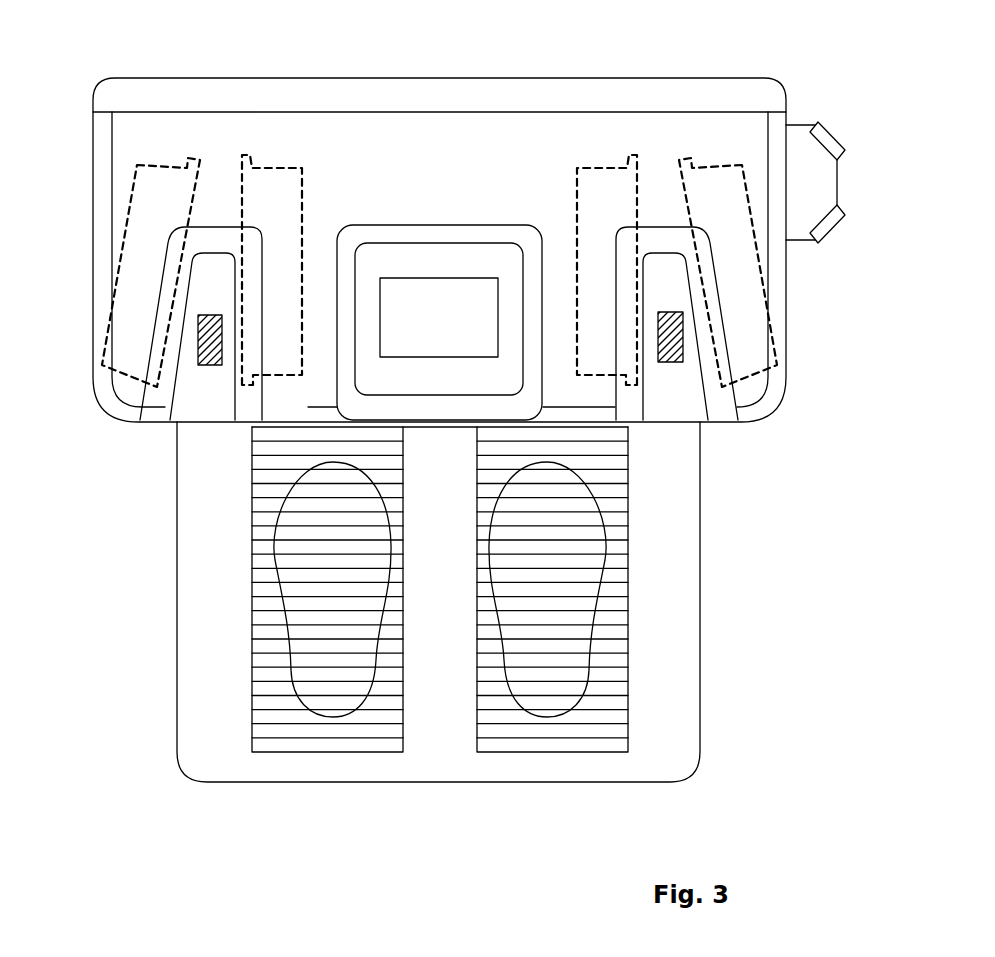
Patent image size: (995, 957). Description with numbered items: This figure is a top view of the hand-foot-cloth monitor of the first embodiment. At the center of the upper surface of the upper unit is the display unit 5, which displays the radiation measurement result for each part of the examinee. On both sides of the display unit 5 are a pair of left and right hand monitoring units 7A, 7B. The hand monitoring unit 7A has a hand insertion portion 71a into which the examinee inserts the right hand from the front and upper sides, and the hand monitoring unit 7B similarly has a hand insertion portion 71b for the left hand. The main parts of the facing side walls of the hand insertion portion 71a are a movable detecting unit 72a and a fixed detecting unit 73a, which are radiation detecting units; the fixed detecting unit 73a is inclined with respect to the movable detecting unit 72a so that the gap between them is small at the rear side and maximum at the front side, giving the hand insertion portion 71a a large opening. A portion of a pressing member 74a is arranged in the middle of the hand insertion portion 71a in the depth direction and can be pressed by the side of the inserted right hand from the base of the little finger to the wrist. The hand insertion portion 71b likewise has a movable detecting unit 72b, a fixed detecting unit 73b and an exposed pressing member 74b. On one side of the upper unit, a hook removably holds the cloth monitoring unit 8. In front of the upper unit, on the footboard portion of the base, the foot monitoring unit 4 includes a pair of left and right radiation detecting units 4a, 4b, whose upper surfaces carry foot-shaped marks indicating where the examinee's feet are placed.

The foot monitoring unit 4 is at (438, 679).
The radiation detecting unit 4a is at (333, 655).
The radiation detecting unit 4b is at (551, 655).
The display unit 5 is at (435, 307).
The hand monitoring unit 7A is at (716, 323).
The hand monitoring unit 7B is at (163, 324).
The cloth monitoring unit 8 is at (835, 112).
The hand insertion portion 71a is at (675, 383).
The hand insertion portion 71b is at (202, 387).
The movable detecting unit 72a is at (603, 340).
The movable detecting unit 72b is at (272, 342).
The fixed detecting unit 73a is at (742, 310).
The fixed detecting unit 73b is at (133, 315).
The pressing member 74a is at (675, 335).
The pressing member 74b is at (205, 343).